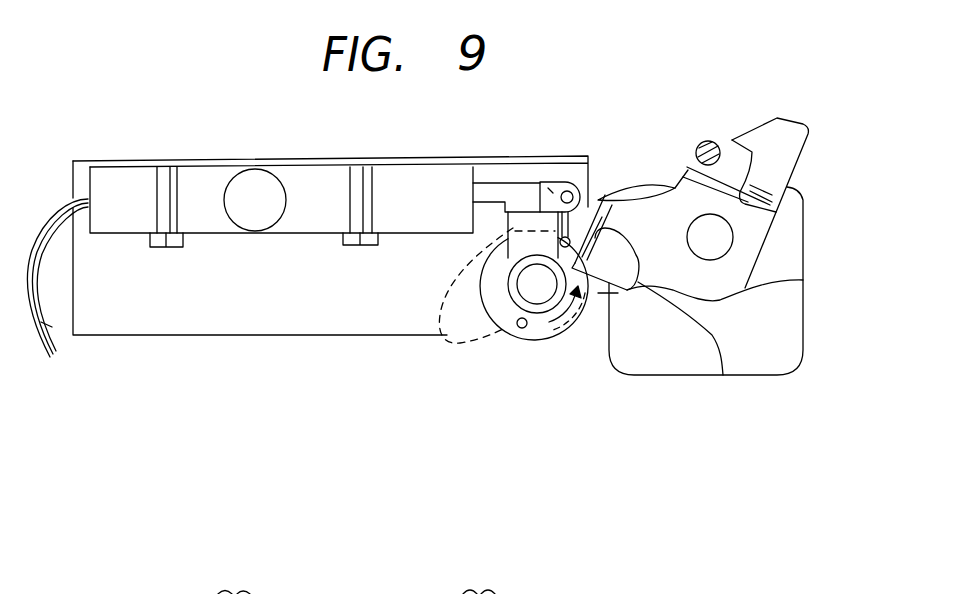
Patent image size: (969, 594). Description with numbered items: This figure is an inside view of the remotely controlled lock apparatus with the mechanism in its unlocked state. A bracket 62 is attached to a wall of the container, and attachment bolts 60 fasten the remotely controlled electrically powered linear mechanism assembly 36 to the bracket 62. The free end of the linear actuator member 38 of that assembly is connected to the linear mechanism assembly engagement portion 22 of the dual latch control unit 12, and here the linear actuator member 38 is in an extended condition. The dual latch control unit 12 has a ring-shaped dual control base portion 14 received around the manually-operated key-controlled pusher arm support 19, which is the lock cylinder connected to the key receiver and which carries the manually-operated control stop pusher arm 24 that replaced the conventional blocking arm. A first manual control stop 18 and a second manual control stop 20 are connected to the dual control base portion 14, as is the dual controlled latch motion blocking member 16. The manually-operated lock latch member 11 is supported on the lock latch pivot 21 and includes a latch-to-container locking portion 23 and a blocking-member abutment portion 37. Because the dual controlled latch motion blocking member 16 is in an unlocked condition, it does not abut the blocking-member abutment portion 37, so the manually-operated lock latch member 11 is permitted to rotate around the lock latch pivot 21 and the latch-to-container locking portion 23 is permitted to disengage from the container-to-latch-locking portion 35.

The manually-operated lock latch member 11 is at (800, 280).
The dual latch control unit 12 is at (477, 247).
The dual control base portion 14 is at (643, 284).
The dual controlled latch motion blocking member 16 is at (567, 307).
The first manual control stop 18 is at (600, 196).
The manually-operated key-controlled pusher arm support 19 is at (528, 287).
The second manual control stop 20 is at (527, 326).
The lock latch pivot 21 is at (712, 237).
The linear mechanism assembly engagement portion 22 is at (566, 192).
The latch-to-container locking portion 23 is at (778, 130).
The manually-operated control stop pusher arm 24 is at (490, 188).
The container-to-latch-locking portion 35 is at (708, 140).
The remotely controlled electrically powered linear mechanism assembly 36 is at (262, 158).
The blocking-member abutment portion 37 is at (723, 375).
The linear actuator member 38 is at (507, 193).
The attachment bolts 60 is at (355, 207).
The bracket 62 is at (128, 170).